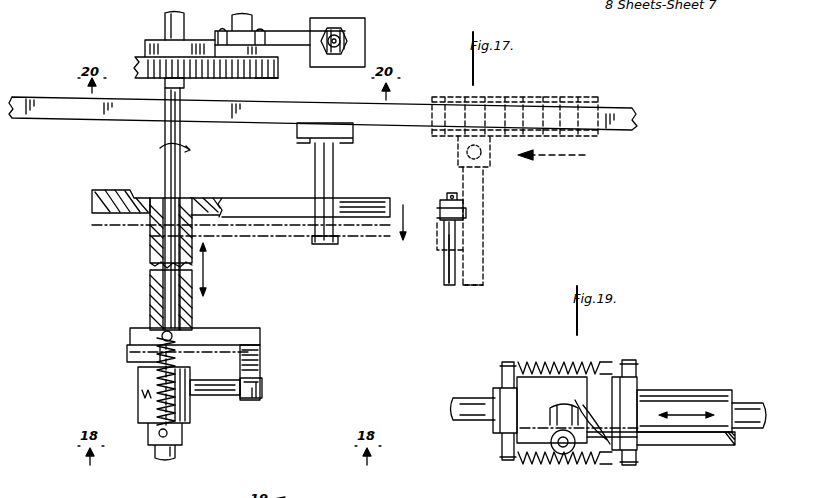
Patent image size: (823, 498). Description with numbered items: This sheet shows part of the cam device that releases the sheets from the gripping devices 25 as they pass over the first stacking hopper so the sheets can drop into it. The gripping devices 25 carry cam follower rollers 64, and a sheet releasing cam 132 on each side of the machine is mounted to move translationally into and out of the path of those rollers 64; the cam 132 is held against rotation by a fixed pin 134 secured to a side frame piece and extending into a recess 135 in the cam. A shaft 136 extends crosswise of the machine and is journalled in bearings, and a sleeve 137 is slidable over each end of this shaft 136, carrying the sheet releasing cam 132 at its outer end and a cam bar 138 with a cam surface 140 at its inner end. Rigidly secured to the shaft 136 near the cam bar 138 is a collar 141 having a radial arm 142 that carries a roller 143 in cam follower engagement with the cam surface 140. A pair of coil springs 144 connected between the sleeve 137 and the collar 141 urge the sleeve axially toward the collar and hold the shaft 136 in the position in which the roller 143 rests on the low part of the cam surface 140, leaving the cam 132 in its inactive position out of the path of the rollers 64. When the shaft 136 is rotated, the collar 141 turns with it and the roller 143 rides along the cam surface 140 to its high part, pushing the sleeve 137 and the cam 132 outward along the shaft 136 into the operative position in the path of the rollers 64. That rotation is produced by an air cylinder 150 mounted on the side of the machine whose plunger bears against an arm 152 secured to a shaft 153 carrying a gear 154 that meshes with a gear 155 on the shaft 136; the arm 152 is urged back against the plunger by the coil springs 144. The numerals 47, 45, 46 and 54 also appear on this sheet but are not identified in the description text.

In FIG. 17, the shaft 47 is at (26, 97).
In FIG. 17, the track 45 is at (560, 97).
In FIG. 17, the shaft 136 is at (166, 16).
In FIG. 19, the shaft 136 is at (466, 398).
In FIG. 17, the gear 155 is at (135, 58).
In FIG. 17, the gear 154 is at (258, 80).
In FIG. 17, the shaft 153 is at (253, 21).
In FIG. 17, the air cylinder 150 is at (362, 37).
In FIG. 17, the arm 152 is at (318, 48).
In FIG. 17, the fixed pin 134 is at (330, 170).
In FIG. 17, the sheet releasing cam 132 is at (263, 215).
In FIG. 17, the sleeve 137 is at (150, 283).
In FIG. 19, the sleeve 137 is at (702, 446).
In FIG. 17, the cam follower roller 64 is at (436, 207).
In FIG. 17, the gripping device 25 is at (457, 236).
In FIG. 17, the dashed guide 54 is at (482, 270).
In FIG. 17, the cam bar 138 is at (127, 355).
In FIG. 19, the cam bar 138 is at (630, 382).
In FIG. 17, the cam surface 140 is at (262, 360).
In FIG. 19, the cam surface 140 is at (660, 390).
In FIG. 17, the collar 141 is at (138, 412).
In FIG. 17, the coil spring 144 is at (157, 380).
In FIG. 19, the coil spring 144 is at (562, 356).
In FIG. 17, the radial arm 142 is at (215, 396).
In FIG. 19, the radial arm 142 is at (556, 408).
In FIG. 17, the roller 143 is at (252, 399).
In FIG. 19, the roller 143 is at (553, 452).
In FIG. 17, the member 46 is at (44, 494).
In FIG. 17, the recess 135 is at (342, 494).